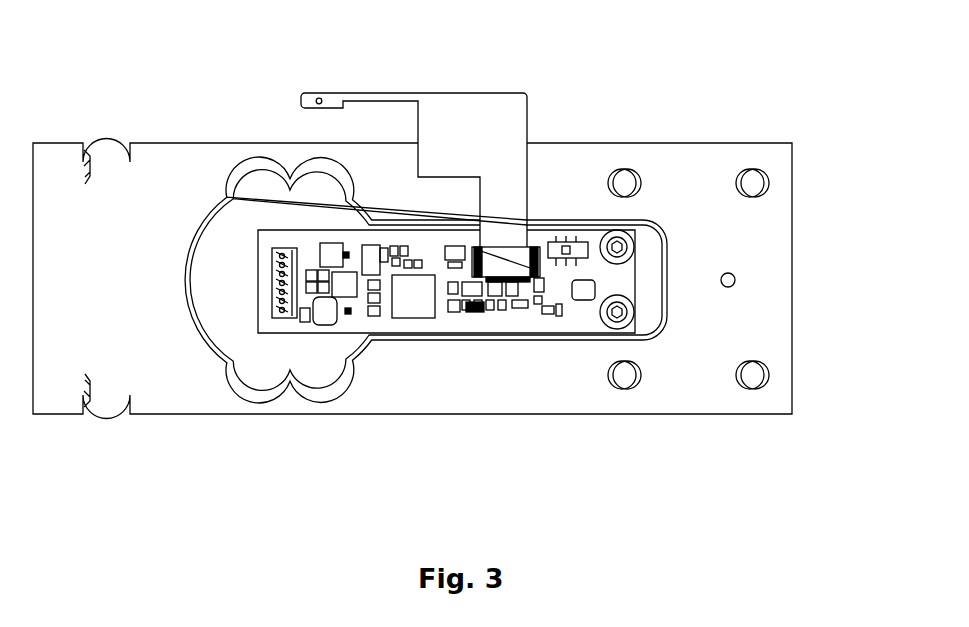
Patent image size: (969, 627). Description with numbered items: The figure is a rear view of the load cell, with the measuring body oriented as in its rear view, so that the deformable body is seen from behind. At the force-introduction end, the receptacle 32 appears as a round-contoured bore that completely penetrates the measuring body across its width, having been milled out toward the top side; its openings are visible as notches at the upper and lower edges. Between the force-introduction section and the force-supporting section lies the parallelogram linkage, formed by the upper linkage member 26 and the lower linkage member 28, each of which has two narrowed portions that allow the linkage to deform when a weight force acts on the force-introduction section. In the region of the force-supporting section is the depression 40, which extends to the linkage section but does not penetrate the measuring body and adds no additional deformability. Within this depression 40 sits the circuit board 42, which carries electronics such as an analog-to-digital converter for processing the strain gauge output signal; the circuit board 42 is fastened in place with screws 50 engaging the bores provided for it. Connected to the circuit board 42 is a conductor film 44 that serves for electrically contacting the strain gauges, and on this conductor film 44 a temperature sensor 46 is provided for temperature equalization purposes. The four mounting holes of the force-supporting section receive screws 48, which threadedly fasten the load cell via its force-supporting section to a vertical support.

The upper linkage member 26 is at (284, 158).
The lower linkage member 28 is at (290, 406).
The receptacle 32 is at (104, 134).
The depression 40 is at (668, 265).
The circuit board 42 is at (438, 322).
The conductor film 44 is at (461, 93).
The temperature sensor 46 is at (320, 98).
The screws 48 is at (632, 178).
The screws 50 is at (630, 240).